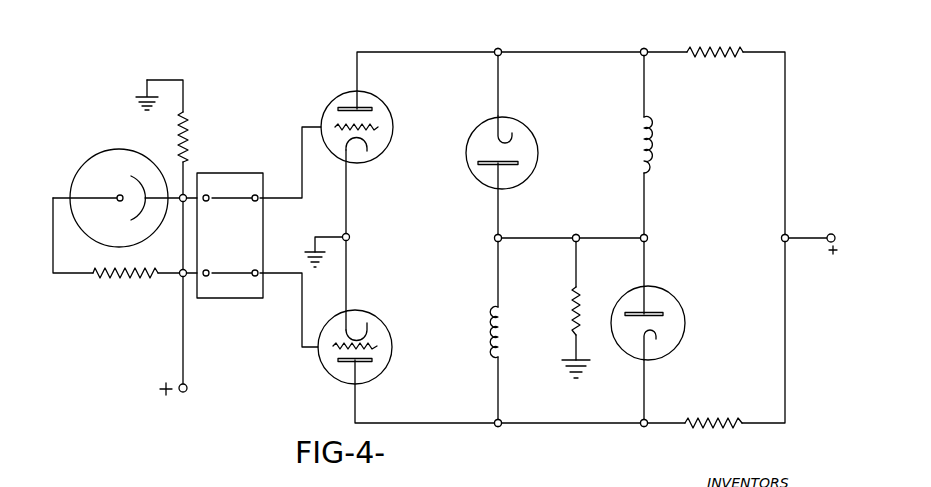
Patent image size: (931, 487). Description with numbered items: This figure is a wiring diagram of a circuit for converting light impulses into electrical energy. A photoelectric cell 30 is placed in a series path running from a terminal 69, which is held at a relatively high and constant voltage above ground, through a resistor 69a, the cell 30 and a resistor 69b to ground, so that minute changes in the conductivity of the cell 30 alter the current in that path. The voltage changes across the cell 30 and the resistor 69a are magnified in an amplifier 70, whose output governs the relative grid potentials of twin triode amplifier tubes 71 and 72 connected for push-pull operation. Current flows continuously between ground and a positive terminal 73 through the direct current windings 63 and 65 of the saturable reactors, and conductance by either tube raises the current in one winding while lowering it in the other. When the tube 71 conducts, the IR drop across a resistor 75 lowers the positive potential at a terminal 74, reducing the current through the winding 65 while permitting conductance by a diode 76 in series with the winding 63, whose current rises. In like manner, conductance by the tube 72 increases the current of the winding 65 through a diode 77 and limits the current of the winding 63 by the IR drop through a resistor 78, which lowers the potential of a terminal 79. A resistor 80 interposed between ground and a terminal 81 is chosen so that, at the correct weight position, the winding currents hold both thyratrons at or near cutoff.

The photoelectric cell 30 is at (115, 149).
The resistor 69a is at (100, 276).
The resistor 69b is at (189, 128).
The terminal 69 is at (188, 388).
The amplifier 70 is at (230, 235).
The twin triode amplifier tube 71 is at (328, 100).
The twin triode amplifier tube 72 is at (329, 373).
The terminal 74 is at (499, 48).
The resistor 75 is at (746, 47).
The diode 76 is at (538, 141).
The direct current winding 65 is at (651, 140).
The terminal 81 is at (495, 235).
The direct current winding 63 is at (492, 310).
The resistor 80 is at (572, 298).
The diode 77 is at (684, 314).
The positive terminal 73 is at (828, 234).
The terminal 79 is at (496, 428).
The resistor 78 is at (737, 428).